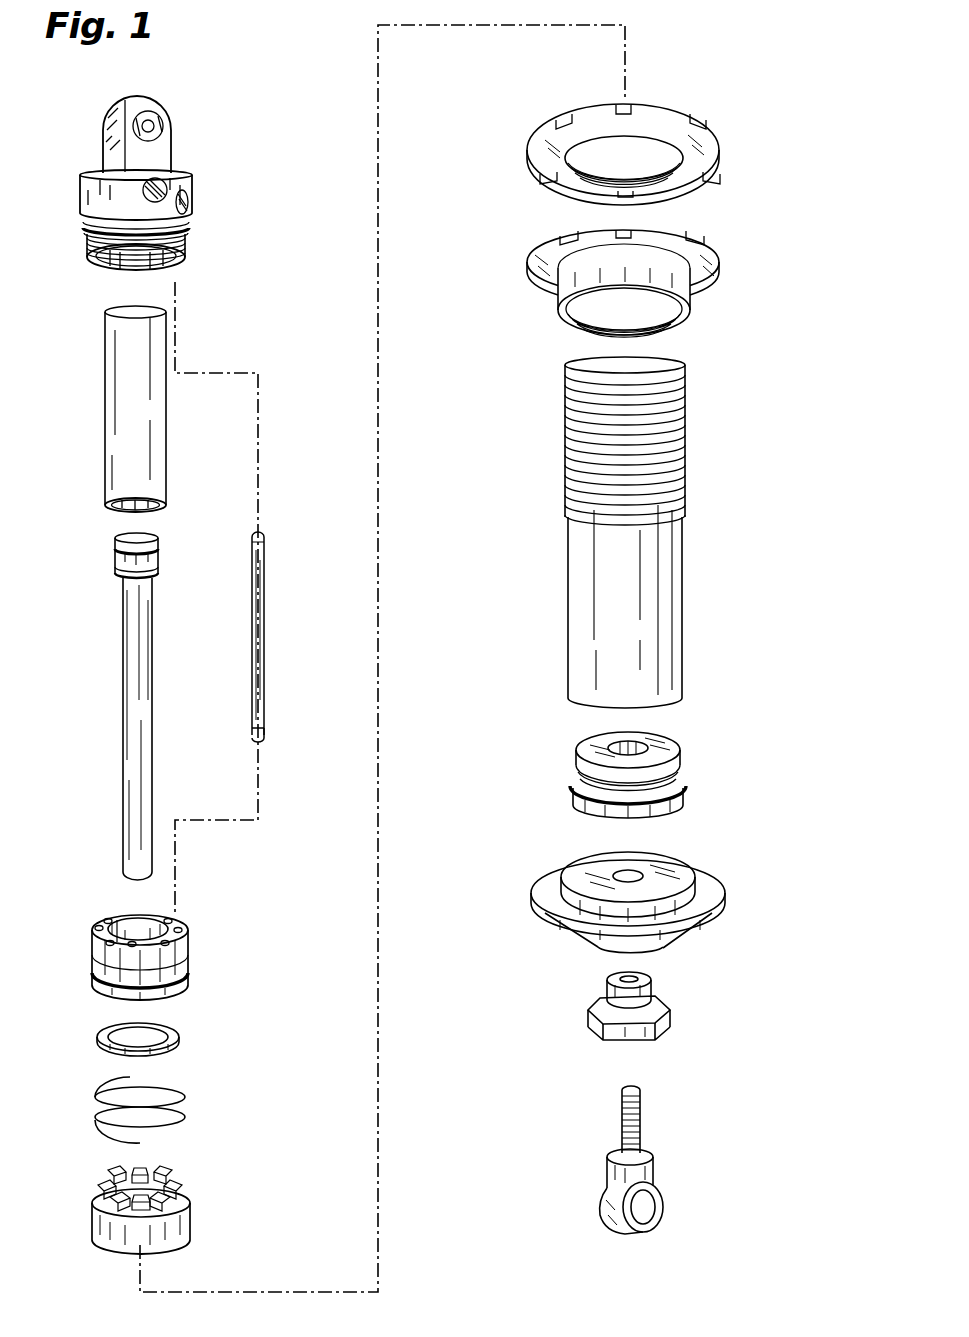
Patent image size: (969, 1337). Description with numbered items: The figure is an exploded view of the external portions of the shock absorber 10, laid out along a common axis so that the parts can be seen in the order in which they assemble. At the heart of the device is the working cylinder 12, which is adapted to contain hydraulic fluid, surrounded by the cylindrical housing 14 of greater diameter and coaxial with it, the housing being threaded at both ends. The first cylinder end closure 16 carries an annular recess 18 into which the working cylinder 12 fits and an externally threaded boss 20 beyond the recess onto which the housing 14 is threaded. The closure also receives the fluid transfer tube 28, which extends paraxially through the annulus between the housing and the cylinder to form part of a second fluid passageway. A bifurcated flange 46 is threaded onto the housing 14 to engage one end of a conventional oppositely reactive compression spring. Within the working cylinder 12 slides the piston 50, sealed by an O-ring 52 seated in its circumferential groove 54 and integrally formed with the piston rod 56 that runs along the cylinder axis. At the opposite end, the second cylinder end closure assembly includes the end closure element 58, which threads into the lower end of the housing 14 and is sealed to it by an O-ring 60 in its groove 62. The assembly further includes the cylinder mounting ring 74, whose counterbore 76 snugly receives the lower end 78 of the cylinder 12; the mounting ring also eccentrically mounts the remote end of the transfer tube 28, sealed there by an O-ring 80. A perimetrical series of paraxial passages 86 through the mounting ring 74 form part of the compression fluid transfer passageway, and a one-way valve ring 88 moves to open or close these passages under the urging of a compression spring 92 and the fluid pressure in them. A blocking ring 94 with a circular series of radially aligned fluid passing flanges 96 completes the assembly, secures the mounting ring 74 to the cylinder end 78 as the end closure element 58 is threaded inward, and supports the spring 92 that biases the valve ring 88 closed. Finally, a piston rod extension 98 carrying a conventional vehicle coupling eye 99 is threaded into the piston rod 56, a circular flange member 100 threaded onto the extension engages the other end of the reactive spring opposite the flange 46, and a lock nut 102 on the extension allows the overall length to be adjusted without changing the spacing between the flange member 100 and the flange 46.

The shock absorber 10 is at (264, 152).
The working cylinder 12 is at (160, 430).
The cylindrical housing 14 is at (686, 584).
The first cylinder end closure 16 is at (84, 202).
The annular recess 18 is at (128, 262).
The externally threaded boss 20 is at (158, 290).
The fluid transfer tube 28 is at (266, 621).
The bifurcated flange 46 is at (708, 248).
The piston 50 is at (118, 574).
The O-ring 52 is at (116, 548).
The piston circumferential groove 54 is at (133, 548).
The piston rod 56 is at (146, 682).
The end closure element 58 is at (668, 744).
The O-ring 60 is at (684, 788).
The groove 62 is at (668, 812).
The cylinder mounting ring 74 is at (187, 944).
The counterbore 76 is at (117, 920).
The lower end of cylinder 78 is at (167, 494).
The O-ring 80 is at (266, 734).
The paraxial passages 86 is at (147, 951).
The valve ring 88 is at (179, 1044).
The compression spring 92 is at (185, 1098).
The blocking ring 94 is at (180, 1227).
The fluid passing flanges 96 is at (180, 1186).
The piston rod extension 98 is at (645, 1154).
The vehicle coupling eye 99 is at (664, 1209).
The circular flange member 100 is at (708, 913).
The lock nut 102 is at (666, 1028).